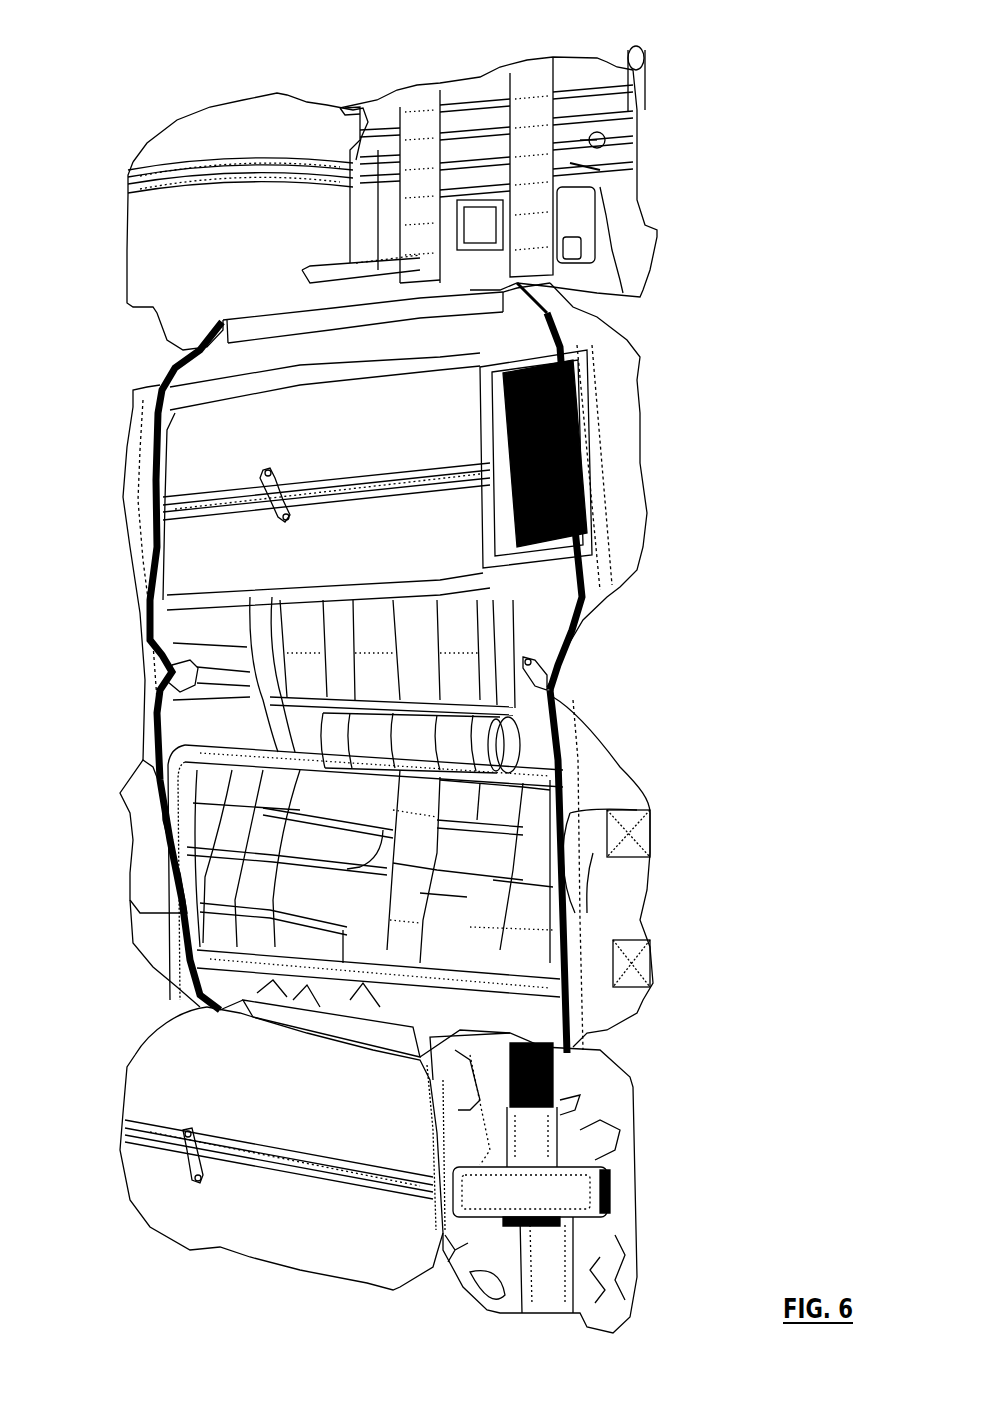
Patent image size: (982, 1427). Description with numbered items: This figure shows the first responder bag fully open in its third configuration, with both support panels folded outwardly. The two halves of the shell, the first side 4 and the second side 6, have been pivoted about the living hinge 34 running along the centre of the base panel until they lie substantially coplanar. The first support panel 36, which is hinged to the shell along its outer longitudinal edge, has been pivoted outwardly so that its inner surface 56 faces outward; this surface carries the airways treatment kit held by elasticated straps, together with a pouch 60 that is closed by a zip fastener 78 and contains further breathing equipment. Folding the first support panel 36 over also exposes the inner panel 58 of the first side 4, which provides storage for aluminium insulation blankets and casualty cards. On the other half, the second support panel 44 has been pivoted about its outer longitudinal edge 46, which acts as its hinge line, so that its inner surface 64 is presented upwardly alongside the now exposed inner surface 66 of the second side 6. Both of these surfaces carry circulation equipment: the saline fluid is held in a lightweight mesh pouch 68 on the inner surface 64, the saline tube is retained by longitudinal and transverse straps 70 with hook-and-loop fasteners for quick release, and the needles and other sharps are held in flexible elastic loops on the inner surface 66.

The first side 4 is at (623, 500).
The second side 6 is at (610, 787).
The hinge 34 is at (193, 673).
The first support panel 36 is at (623, 148).
The second support panel 44 is at (630, 1127).
The outer longitudinal edge 46 is at (400, 1027).
The inner surface 56 is at (197, 250).
The inner panel 58 is at (167, 507).
The pouch 60 is at (213, 130).
The inner surface 64 is at (160, 1093).
The inner surface 66 is at (207, 860).
The pouch 68 is at (145, 1170).
The straps 70 is at (617, 1183).
The zip fastener 78 is at (263, 163).